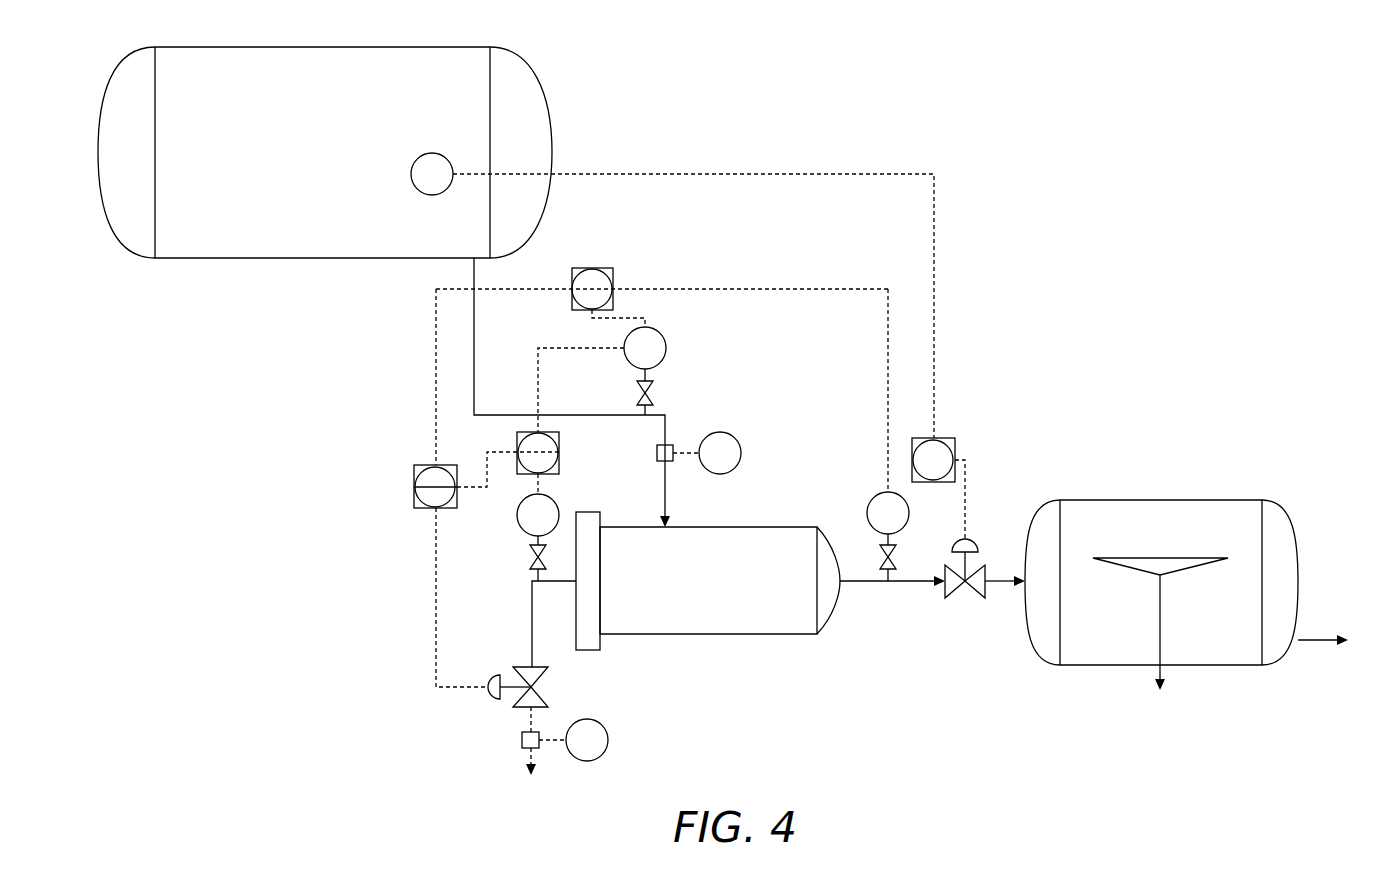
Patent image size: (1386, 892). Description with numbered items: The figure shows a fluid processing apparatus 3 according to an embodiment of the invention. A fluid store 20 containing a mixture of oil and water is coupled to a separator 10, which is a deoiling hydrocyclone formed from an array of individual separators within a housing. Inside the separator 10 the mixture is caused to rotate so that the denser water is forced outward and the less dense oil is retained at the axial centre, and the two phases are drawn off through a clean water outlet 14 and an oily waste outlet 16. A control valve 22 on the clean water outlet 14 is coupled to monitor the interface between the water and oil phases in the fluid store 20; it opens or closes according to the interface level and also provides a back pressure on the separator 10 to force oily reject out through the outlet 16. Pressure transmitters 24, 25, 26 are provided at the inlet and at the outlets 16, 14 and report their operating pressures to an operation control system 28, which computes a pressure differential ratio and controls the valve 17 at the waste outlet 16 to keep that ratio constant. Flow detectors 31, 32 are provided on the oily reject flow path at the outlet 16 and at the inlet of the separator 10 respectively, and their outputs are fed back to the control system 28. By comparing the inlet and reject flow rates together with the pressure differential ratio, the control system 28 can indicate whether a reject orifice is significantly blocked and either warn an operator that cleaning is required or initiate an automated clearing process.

The fluid processing apparatus 3 is at (732, 429).
The separator 10 is at (798, 634).
The clean water outlet 14 is at (862, 583).
The oily waste outlet 16 is at (557, 584).
The valve 17 is at (522, 667).
The fluid store 20 is at (212, 258).
The control valve 22 is at (955, 599).
The pressure transmitter 24 is at (667, 348).
The pressure transmitter 25 is at (522, 528).
The pressure transmitter 26 is at (868, 501).
The operation control system 28 is at (424, 465).
The flow detector 31 is at (585, 761).
The flow detector 32 is at (741, 453).